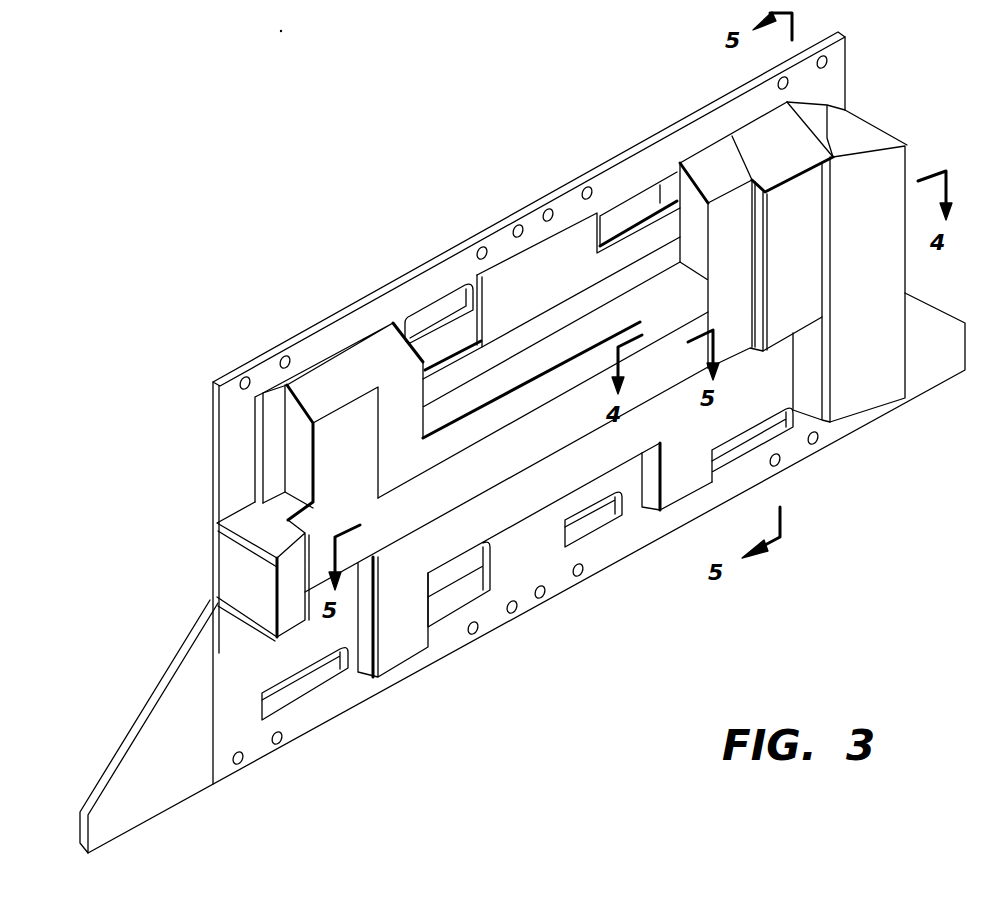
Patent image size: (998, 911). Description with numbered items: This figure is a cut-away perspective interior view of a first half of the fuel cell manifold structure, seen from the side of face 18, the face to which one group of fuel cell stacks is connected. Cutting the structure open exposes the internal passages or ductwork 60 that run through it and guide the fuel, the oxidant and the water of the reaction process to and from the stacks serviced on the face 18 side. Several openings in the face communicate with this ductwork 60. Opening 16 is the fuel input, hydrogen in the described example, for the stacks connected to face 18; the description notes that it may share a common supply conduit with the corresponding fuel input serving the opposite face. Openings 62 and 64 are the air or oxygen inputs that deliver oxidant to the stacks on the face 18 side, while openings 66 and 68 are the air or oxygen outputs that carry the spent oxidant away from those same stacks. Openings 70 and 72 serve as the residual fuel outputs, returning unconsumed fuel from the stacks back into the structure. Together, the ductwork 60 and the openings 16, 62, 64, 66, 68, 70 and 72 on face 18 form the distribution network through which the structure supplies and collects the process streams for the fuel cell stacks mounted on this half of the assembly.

The opening 16 is at (254, 562).
The face 18 is at (212, 458).
The internal passages or ductwork 60 is at (550, 128).
The opening 62 is at (430, 320).
The opening 64 is at (617, 218).
The opening 66 is at (308, 677).
The opening 68 is at (757, 418).
The opening 70 is at (453, 589).
The opening 72 is at (589, 516).